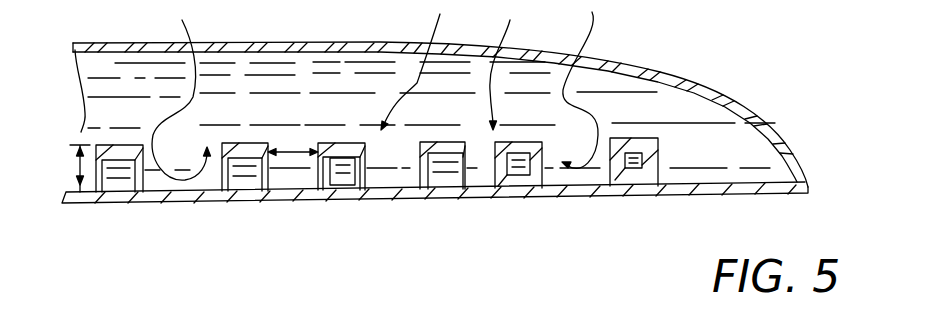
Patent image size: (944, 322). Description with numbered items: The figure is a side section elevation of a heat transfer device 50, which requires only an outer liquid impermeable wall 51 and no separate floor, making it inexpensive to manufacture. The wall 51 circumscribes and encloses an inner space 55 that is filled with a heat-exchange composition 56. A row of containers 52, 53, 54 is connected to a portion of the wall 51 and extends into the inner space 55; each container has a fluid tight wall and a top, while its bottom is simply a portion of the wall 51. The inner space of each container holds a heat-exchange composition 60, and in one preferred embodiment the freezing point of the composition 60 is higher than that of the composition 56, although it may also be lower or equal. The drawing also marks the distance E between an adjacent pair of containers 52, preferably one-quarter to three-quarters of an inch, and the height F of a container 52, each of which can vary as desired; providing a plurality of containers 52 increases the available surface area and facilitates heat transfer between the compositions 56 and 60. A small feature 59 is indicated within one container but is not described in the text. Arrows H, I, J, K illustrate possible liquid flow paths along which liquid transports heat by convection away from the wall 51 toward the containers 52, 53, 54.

The heat transfer device 50 is at (598, 33).
The outer liquid impermeable wall 51 is at (334, 36).
The container 52 is at (218, 168).
The container 53 is at (521, 174).
The container 54 is at (623, 176).
The inner space 55 is at (110, 70).
The heat-exchange composition 56 is at (222, 80).
The fastener block 59 is at (347, 180).
The heat-exchange composition 60 is at (333, 162).
The distance between adjacent containers E is at (296, 150).
The container height F is at (78, 177).
The liquid flow path H is at (181, 90).
The liquid flow path I is at (416, 65).
The liquid flow path J is at (505, 65).
The liquid flow path K is at (580, 84).